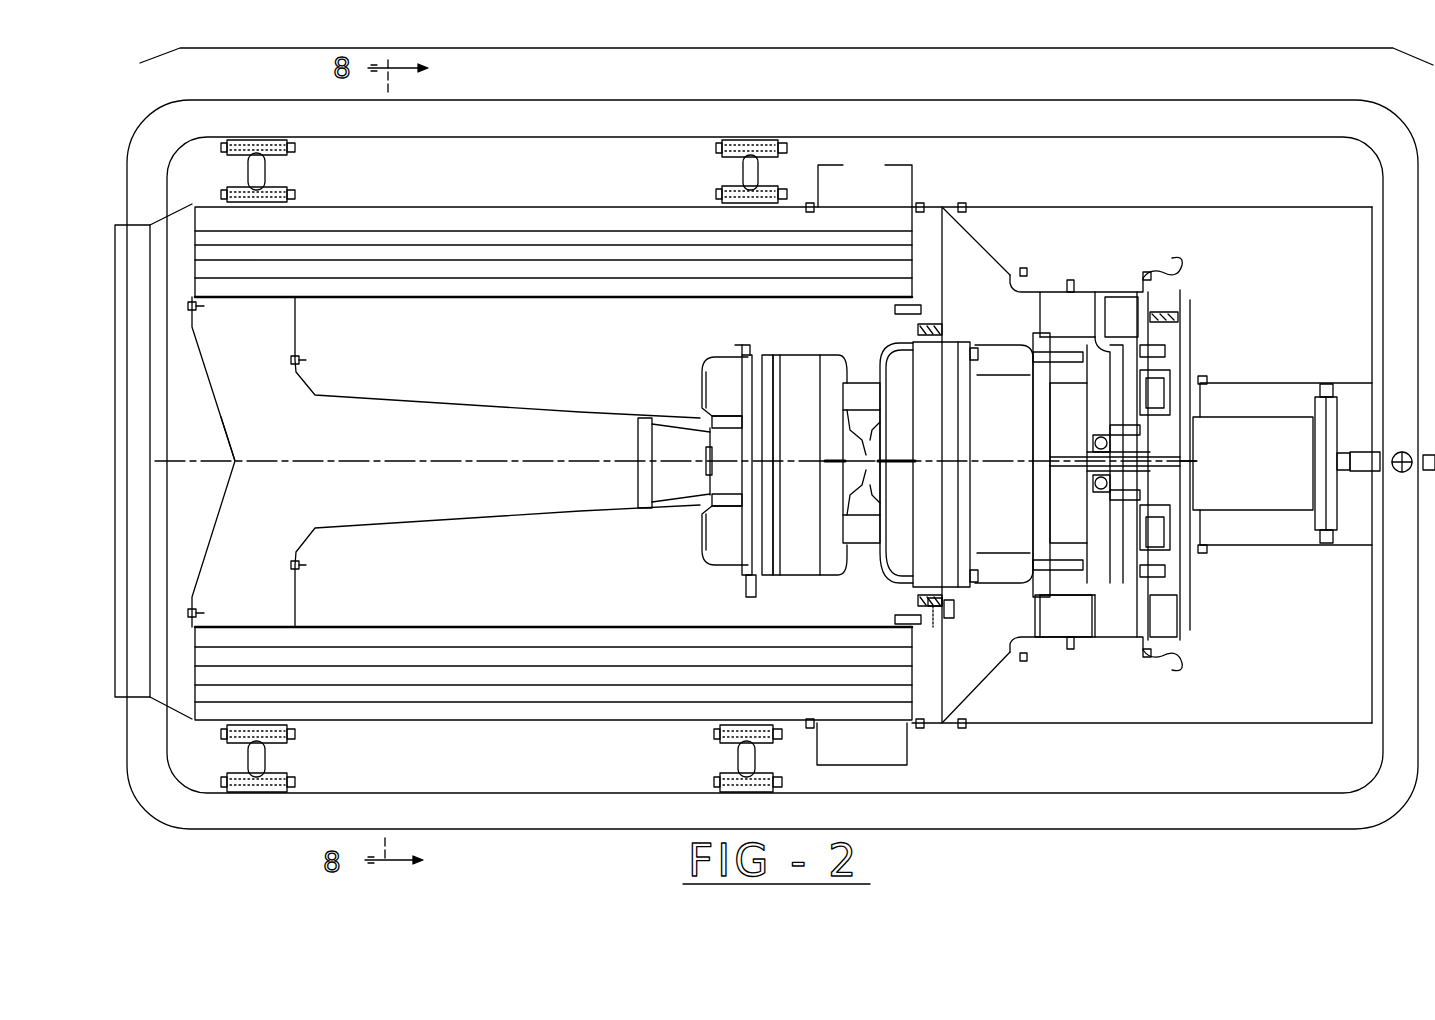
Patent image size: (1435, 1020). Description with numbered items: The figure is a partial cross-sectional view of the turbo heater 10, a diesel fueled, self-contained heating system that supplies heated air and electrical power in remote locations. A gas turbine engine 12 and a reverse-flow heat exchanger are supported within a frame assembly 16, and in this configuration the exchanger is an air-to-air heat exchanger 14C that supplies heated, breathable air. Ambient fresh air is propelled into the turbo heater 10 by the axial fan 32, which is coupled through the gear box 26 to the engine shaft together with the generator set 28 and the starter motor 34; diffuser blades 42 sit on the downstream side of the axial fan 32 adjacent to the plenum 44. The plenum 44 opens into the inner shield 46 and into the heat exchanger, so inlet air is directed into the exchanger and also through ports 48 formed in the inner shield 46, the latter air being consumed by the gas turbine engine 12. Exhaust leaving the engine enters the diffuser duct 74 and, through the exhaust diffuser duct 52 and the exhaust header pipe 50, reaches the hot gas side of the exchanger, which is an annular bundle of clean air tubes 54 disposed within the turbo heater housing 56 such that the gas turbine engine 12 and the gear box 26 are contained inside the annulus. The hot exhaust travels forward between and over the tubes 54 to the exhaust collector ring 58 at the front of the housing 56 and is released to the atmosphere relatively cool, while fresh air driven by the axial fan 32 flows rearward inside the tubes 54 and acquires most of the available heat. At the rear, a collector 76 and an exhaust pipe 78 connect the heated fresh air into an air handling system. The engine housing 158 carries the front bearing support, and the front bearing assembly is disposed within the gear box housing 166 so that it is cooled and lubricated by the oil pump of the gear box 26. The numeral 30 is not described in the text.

The turbo heater 10 is at (790, 50).
The air-to-air heat exchanger 14C is at (490, 742).
The frame assembly 16 is at (315, 776).
The exhaust pipe 78 is at (138, 641).
The collector 76 is at (191, 527).
The diffuser duct 74 is at (231, 445).
The clean air tubes 54 is at (403, 242).
The turbo heater housing 56 is at (625, 729).
The exhaust collector ring 58 is at (912, 184).
The plenum 44 is at (994, 307).
The exhaust diffuser duct 52 is at (588, 410).
The exhaust header pipe 50 is at (689, 504).
The gas turbine engine 12 is at (852, 345).
The engine housing 158 is at (812, 424).
The gear box 26 is at (876, 589).
The gear box housing 166 is at (946, 521).
The generator set 28 is at (1000, 364).
The axial fan 32 is at (1130, 326).
The diffuser blades 42 is at (1076, 628).
The accessory housing 30 is at (1176, 627).
The starter motor 34 is at (1272, 473).
The ports 48 is at (942, 611).
The inner shield 46 is at (962, 625).